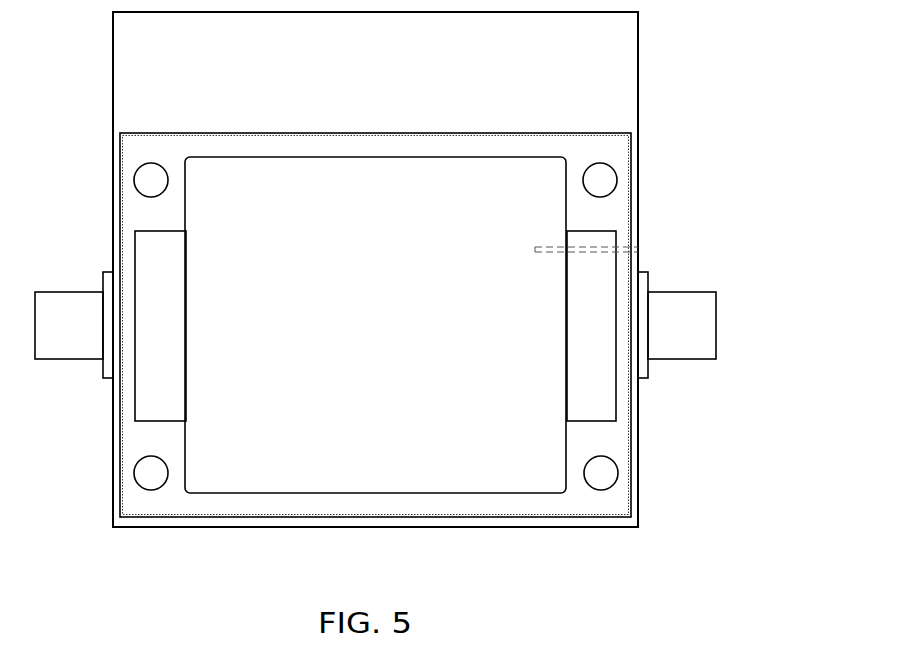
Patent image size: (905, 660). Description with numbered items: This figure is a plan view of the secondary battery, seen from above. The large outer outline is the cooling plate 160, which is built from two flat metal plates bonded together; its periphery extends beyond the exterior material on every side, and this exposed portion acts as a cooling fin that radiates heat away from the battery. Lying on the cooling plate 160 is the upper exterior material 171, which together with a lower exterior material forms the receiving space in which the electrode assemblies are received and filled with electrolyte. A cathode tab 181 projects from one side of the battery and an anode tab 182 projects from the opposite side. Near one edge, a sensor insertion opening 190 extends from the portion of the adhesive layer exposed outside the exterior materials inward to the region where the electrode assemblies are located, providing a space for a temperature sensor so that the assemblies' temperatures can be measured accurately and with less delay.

The cooling plate 160 is at (630, 68).
The upper exterior material 171 is at (622, 153).
The cathode tab 181 is at (693, 348).
The anode tab 182 is at (62, 348).
The sensor insertion opening 190 is at (622, 245).